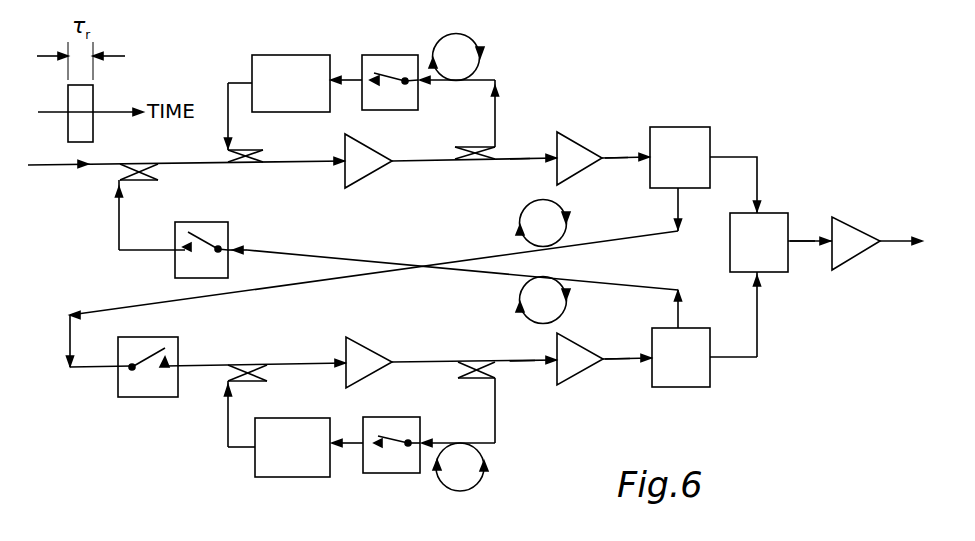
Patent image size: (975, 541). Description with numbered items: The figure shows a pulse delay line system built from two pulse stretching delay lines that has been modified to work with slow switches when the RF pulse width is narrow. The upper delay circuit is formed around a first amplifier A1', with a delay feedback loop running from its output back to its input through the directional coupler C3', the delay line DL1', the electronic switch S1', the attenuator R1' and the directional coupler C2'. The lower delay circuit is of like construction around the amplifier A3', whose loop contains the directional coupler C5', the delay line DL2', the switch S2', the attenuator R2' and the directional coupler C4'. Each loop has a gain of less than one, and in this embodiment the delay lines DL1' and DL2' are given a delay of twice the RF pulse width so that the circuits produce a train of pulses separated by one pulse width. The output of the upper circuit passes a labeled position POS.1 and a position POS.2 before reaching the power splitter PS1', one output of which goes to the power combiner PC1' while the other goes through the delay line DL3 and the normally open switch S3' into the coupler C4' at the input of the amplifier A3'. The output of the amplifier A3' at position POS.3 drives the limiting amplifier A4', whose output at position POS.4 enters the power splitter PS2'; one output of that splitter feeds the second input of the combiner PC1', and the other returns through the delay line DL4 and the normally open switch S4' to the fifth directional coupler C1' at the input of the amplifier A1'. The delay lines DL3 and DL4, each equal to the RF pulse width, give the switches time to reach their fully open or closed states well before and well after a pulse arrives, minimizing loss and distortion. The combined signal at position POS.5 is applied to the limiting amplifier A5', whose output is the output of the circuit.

The first amplifier A1' is at (368, 175).
The amplifier A3' is at (369, 353).
The limiting amplifier A4' is at (587, 352).
The limiting amplifier A5' is at (877, 255).
The fifth directional coupler C1' is at (151, 207).
The directional coupler C2' is at (244, 140).
The directional coupler C3' is at (459, 136).
The directional coupler C4' is at (246, 387).
The directional coupler C5' is at (458, 387).
The attenuator R1' is at (307, 68).
The attenuator R2' is at (292, 466).
The electronic switch S1' is at (390, 65).
The switch S2' is at (376, 465).
The switch S3' is at (159, 350).
The switch S4' is at (219, 242).
The delay line DL1' is at (477, 52).
The delay line DL2' is at (476, 478).
The delay line DL3 is at (565, 207).
The delay line DL4 is at (568, 301).
The power splitter PS1' is at (414, 233).
The power splitter PS2' is at (502, 333).
The power combiner PC1' is at (755, 285).
The position 1 POS.1 is at (520, 156).
The position 2 POS.2 is at (615, 154).
The position 3 POS.3 is at (525, 365).
The position 4 POS.4 is at (617, 365).
The position 5 POS.5 is at (800, 237).